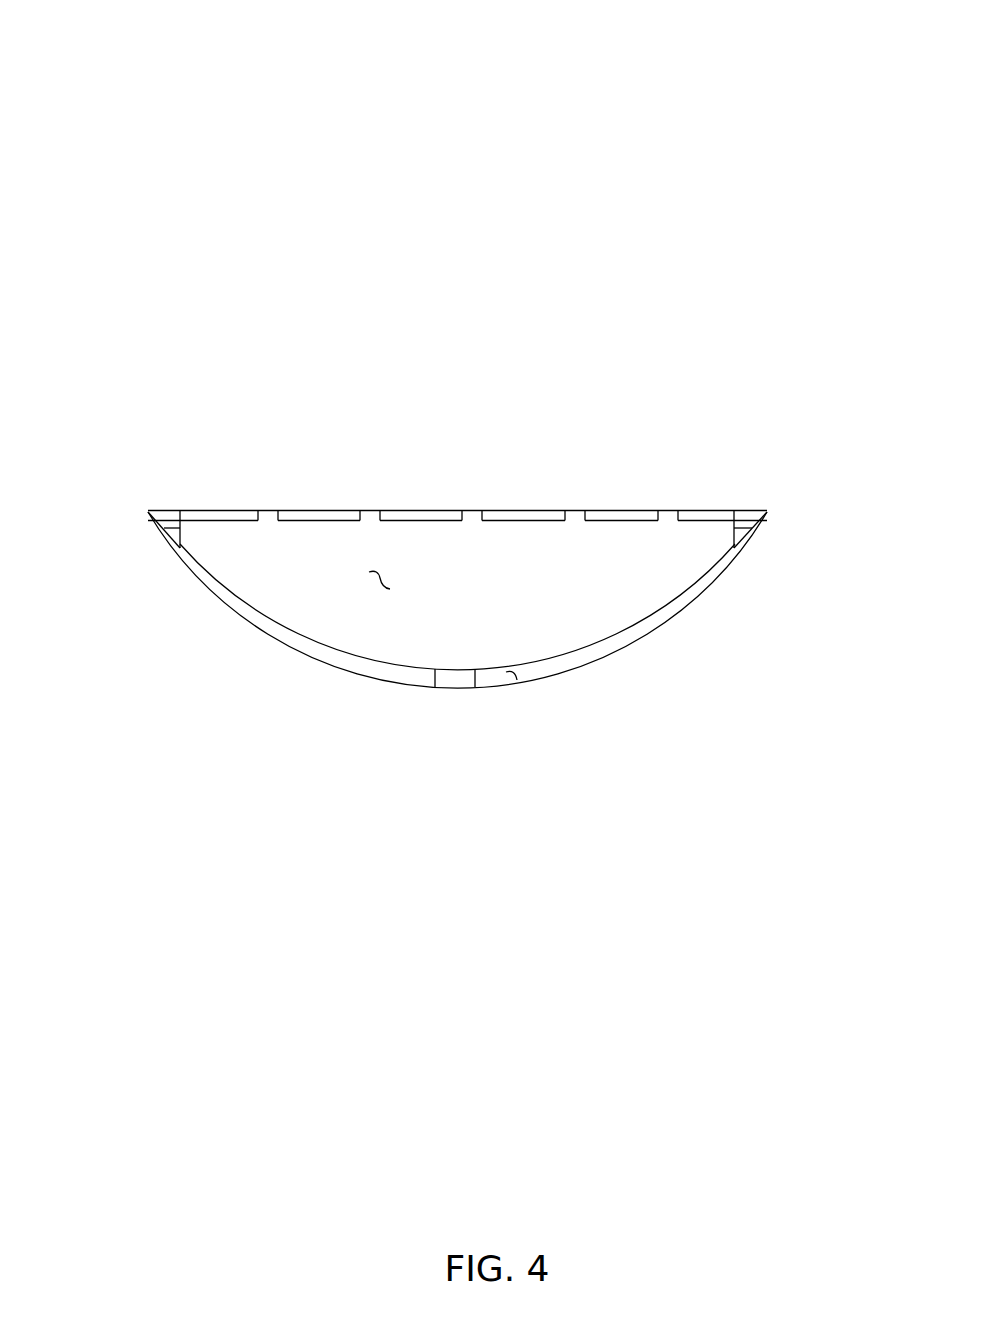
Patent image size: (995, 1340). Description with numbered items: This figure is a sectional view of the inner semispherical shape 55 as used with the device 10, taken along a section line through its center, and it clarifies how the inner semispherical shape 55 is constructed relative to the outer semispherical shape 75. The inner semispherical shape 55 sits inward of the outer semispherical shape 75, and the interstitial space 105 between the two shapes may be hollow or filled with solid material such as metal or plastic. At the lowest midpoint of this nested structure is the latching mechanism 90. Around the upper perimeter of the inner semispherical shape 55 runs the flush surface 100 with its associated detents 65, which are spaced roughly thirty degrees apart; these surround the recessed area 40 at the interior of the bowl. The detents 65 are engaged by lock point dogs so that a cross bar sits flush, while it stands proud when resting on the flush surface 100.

The device 10 is at (218, 162).
The recessed area 40 is at (380, 572).
The inner semispherical shape 55 is at (562, 659).
The detent 65 is at (268, 517).
The outer semispherical shape 75 is at (613, 656).
The latching mechanism 90 is at (447, 682).
The flush surface 100 is at (330, 510).
The interstitial space 105 is at (513, 680).